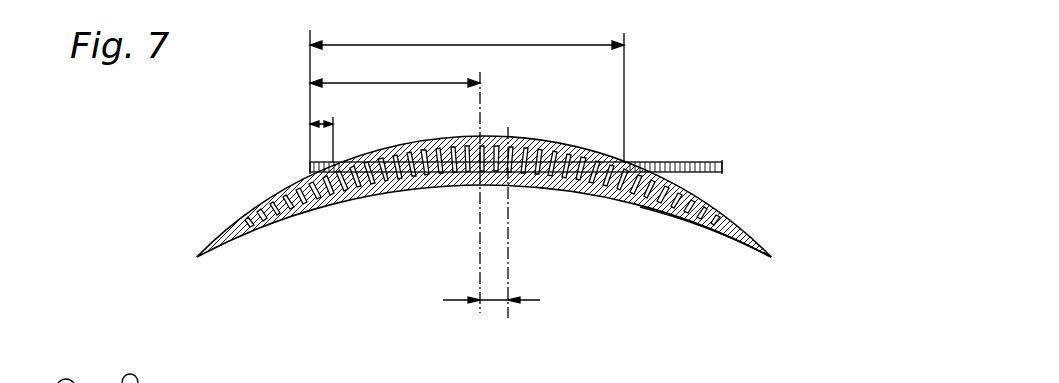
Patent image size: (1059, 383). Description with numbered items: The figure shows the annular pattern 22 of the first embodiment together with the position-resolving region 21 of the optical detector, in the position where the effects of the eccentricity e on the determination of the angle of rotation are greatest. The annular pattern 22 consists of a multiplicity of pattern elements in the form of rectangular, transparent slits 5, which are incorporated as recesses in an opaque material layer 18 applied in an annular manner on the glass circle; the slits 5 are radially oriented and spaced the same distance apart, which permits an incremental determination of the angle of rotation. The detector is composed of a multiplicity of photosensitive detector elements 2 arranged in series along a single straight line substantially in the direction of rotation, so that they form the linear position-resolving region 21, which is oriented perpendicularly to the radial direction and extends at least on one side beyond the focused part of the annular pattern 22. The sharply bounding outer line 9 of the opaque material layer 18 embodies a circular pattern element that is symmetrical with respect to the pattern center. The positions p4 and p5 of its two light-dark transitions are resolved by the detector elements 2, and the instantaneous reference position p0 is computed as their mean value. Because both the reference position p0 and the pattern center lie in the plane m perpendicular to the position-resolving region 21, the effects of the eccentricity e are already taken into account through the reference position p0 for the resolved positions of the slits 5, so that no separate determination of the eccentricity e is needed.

The outer line 9 is at (246, 216).
The annular pattern 22 is at (324, 226).
The opaque material layer 18 is at (640, 214).
The transparent slits 5 is at (714, 240).
The detector elements 2 is at (717, 163).
The position-resolving region 21 is at (733, 170).
The resolved position p5 is at (467, 87).
The instantaneous reference position p0 is at (395, 69).
The resolved position p4 is at (330, 126).
The plane m is at (480, 223).
The eccentricity e is at (491, 222).